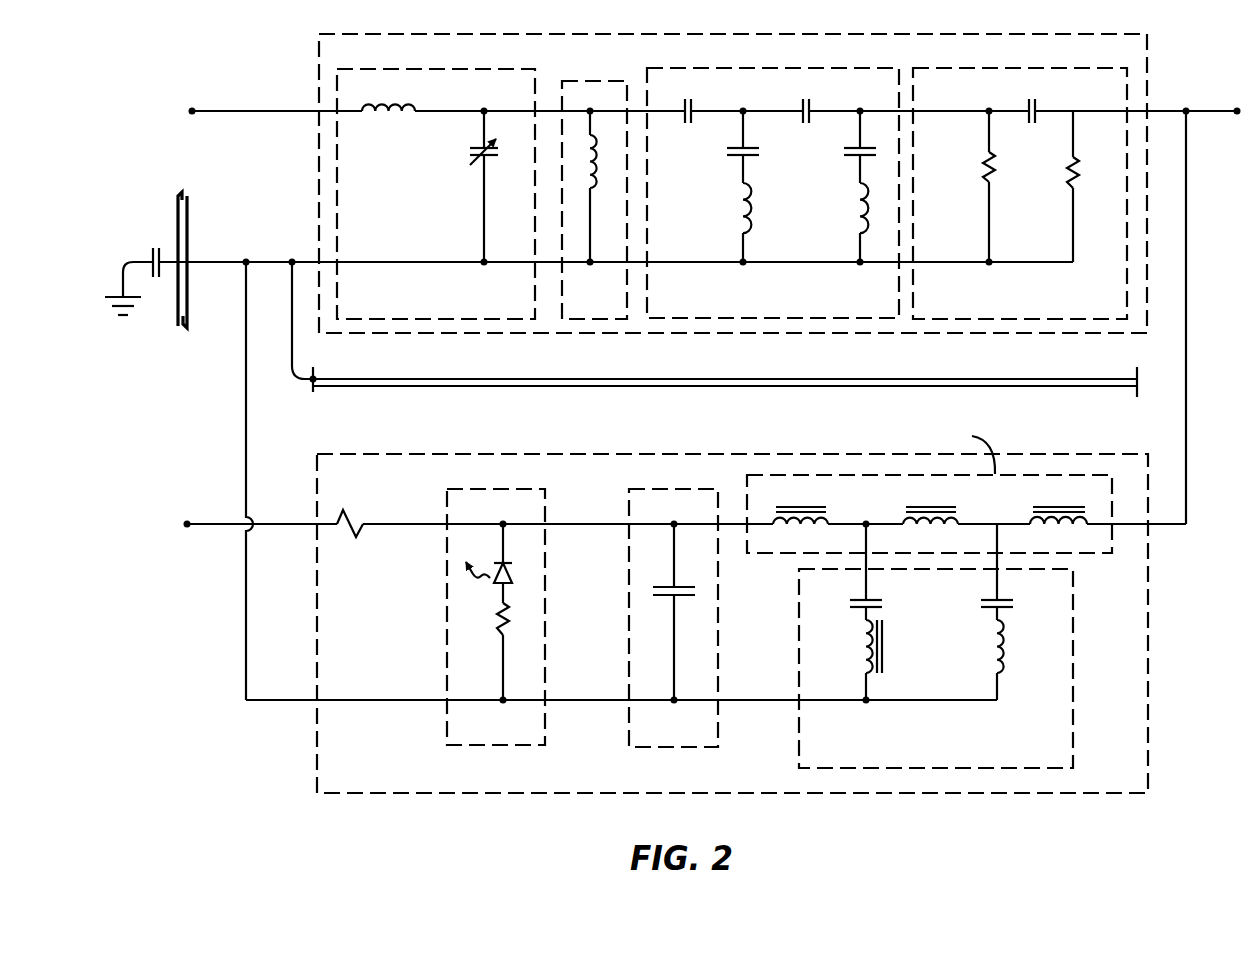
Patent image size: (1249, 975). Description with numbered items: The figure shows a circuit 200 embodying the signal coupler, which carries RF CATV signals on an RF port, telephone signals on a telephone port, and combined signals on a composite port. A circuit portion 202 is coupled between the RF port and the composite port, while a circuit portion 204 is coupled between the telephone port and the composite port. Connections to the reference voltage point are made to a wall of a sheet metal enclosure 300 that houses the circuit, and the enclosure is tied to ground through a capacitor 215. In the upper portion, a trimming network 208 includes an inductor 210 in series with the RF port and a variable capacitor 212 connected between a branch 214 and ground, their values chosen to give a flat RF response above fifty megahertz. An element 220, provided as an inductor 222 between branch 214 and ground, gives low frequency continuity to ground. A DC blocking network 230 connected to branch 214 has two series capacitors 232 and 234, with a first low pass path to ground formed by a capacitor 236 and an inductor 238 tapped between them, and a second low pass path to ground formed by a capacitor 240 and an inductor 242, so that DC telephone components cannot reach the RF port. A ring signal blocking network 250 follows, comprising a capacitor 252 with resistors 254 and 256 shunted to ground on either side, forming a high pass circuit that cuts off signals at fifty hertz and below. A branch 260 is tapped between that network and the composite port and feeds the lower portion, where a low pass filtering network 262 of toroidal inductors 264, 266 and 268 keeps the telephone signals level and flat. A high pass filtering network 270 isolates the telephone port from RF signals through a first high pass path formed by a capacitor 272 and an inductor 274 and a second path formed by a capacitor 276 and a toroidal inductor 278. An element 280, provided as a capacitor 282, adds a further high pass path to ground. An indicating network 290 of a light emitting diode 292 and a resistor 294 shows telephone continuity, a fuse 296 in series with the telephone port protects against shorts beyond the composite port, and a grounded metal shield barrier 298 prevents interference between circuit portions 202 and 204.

The circuit 200 is at (909, 15).
The circuit portion 202 is at (649, 34).
The circuit portion 204 is at (1150, 668).
The trimming network 208 is at (418, 66).
The inductor 210 is at (398, 108).
The variable capacitor 212 is at (471, 159).
The branch 214 is at (466, 110).
The capacitor 215 is at (153, 246).
The element 220 is at (579, 79).
The inductor 222 is at (597, 184).
The DC blocking network 230 is at (770, 67).
The capacitor 232 is at (699, 107).
The capacitor 234 is at (814, 105).
The capacitor 236 is at (726, 158).
The inductor 238 is at (751, 200).
The capacitor 240 is at (845, 150).
The inductor 242 is at (854, 219).
The ring signal blocking network 250 is at (1022, 67).
The capacitor 252 is at (1038, 105).
The resistor 254 is at (995, 160).
The resistor 256 is at (1067, 175).
The branch 260 is at (1188, 220).
The low pass filtering network 262 is at (1045, 472).
The inductor 264 is at (1090, 518).
The inductor 266 is at (965, 517).
The inductor 268 is at (833, 520).
The high pass filtering network 270 is at (1075, 645).
The capacitor 272 is at (1010, 603).
The inductor 274 is at (995, 665).
The capacitor 276 is at (882, 603).
The inductor 278 is at (875, 625).
The element 280 is at (721, 645).
The capacitor 282 is at (694, 587).
The indicating network 290 is at (547, 668).
The light emitting diode 292 is at (513, 578).
The resistor 294 is at (511, 623).
The fuse 296 is at (345, 512).
The metal shield barrier 298 is at (498, 377).
The sheet metal enclosure 300 is at (190, 238).